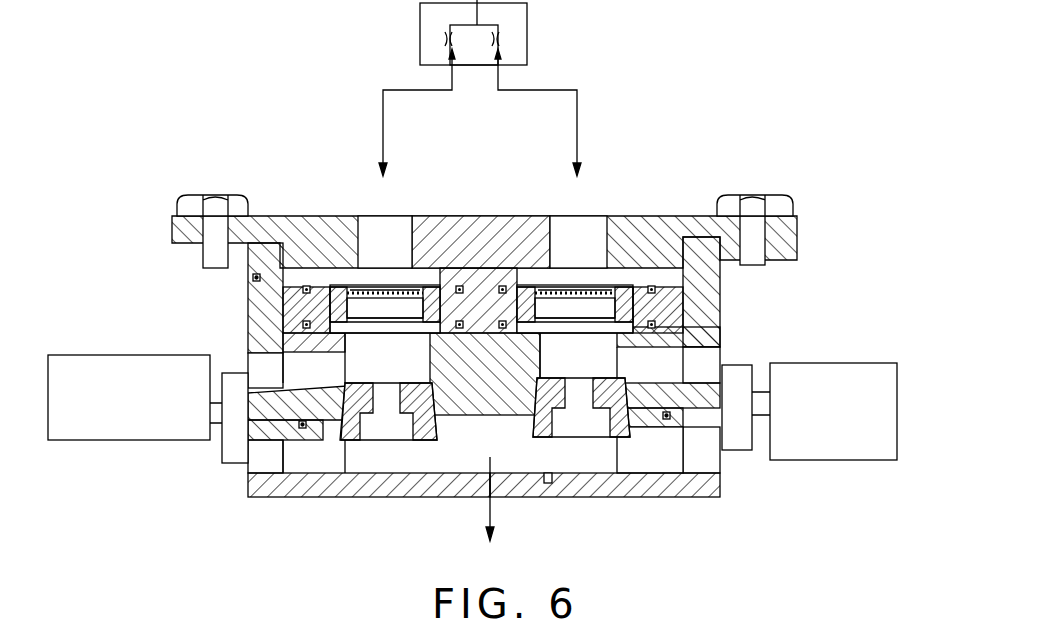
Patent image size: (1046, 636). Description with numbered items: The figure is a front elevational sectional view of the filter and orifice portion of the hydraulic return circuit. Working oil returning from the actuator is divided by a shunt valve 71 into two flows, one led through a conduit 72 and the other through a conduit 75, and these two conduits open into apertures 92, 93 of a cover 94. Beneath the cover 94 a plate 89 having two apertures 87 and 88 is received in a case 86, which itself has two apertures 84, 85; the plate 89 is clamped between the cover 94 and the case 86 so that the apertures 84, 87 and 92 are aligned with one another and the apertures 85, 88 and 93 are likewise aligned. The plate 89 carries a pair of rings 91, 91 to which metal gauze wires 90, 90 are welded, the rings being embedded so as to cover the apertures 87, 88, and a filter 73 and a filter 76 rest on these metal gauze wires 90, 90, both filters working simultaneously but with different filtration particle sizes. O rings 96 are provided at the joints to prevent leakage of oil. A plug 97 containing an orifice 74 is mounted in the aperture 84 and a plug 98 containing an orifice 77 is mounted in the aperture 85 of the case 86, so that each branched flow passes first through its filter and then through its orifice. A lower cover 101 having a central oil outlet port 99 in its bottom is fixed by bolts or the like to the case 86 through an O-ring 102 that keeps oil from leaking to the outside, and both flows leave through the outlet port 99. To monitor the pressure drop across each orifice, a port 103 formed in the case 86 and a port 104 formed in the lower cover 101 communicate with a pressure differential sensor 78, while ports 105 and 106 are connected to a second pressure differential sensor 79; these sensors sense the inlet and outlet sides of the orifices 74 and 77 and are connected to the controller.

The shunt valve 71 is at (527, 10).
The conduit 72 is at (385, 130).
The conduit 75 is at (578, 130).
The filter 73 is at (320, 250).
The orifice 74 is at (385, 440).
The filter 76 is at (640, 290).
The orifice 77 is at (578, 438).
The pressure differential sensor 78 is at (92, 355).
The pressure differential sensor 79 is at (838, 364).
The aperture 84 is at (413, 440).
The aperture 85 is at (613, 438).
The case 86 is at (257, 316).
The aperture 87 is at (300, 312).
The aperture 88 is at (720, 292).
The plate 89 is at (252, 274).
The metal gauze wire 90 is at (404, 290).
The ring 91 is at (455, 300).
The aperture 92 is at (362, 284).
The aperture 93 is at (598, 284).
The cover 94 is at (703, 213).
The O ring 96 is at (305, 288).
The plug 97 is at (365, 445).
The plug 98 is at (548, 484).
The oil outlet port 99 is at (448, 490).
The lower cover 101 is at (250, 497).
The O-ring 102 is at (247, 466).
The port 103 is at (250, 351).
The port 104 is at (300, 497).
The port 105 is at (715, 353).
The port 106 is at (670, 497).